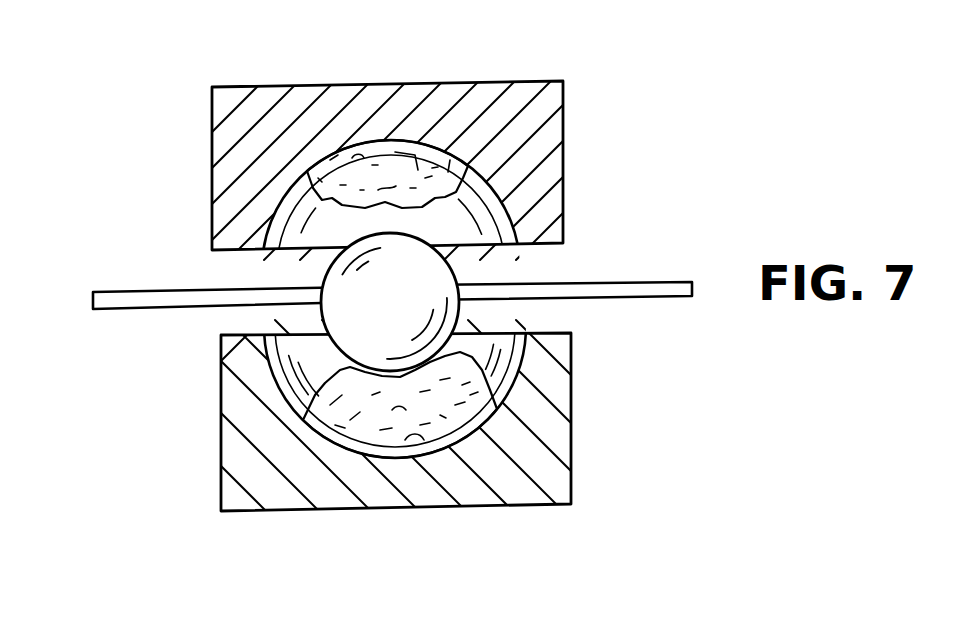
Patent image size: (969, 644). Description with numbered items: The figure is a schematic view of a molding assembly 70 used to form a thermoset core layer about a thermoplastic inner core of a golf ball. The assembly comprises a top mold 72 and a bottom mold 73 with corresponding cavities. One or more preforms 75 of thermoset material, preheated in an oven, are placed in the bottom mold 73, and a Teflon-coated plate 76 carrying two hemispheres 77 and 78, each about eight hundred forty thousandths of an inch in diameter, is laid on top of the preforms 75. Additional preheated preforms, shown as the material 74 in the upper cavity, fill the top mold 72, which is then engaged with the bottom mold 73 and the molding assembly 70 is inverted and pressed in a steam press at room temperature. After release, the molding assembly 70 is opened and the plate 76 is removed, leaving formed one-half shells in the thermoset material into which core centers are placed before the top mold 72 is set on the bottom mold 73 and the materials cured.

The molding assembly 70 is at (126, 144).
The top mold 72 is at (540, 131).
The bottom mold 73 is at (561, 437).
The upper molding material 74 is at (383, 162).
The preform 75 is at (430, 447).
The Teflon-coated plate 76 is at (111, 291).
The hemisphere 77 is at (340, 262).
The hemisphere 78 is at (340, 326).